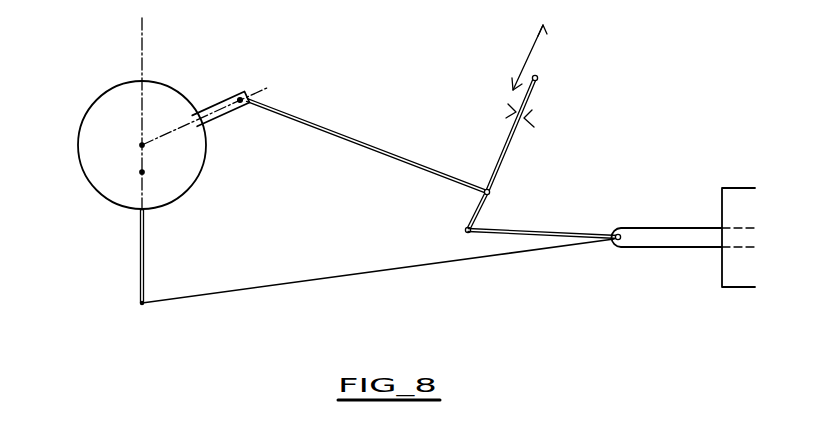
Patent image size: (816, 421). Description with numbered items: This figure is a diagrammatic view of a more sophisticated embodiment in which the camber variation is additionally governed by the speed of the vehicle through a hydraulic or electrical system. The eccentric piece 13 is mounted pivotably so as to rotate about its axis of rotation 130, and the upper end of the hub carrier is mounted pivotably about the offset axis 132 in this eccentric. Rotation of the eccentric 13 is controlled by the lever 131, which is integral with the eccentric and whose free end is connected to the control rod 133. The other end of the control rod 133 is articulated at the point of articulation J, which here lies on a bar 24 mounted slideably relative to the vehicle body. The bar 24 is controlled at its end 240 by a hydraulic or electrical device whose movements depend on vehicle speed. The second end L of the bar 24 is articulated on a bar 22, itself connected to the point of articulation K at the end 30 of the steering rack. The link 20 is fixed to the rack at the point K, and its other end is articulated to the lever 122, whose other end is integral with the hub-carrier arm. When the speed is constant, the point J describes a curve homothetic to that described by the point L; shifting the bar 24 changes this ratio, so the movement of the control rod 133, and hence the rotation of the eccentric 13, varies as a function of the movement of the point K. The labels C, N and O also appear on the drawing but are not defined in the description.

The eccentric piece 13 is at (157, 97).
The axis of rotation 130 is at (142, 145).
The lever 131 is at (225, 95).
The offset axis 132 is at (142, 172).
The control rod 133 is at (353, 140).
The lever 122 is at (147, 273).
The link 20 is at (427, 267).
The bar 22 is at (552, 230).
The bar 24 is at (508, 145).
The end of bar 240 is at (538, 76).
The end of rack 30 is at (675, 233).
The crank pin point C is at (246, 97).
The point of articulation J is at (485, 189).
The point of articulation K is at (621, 231).
The second end of bar L is at (463, 232).
The rotation direction N is at (526, 118).
The displacement direction O is at (538, 43).